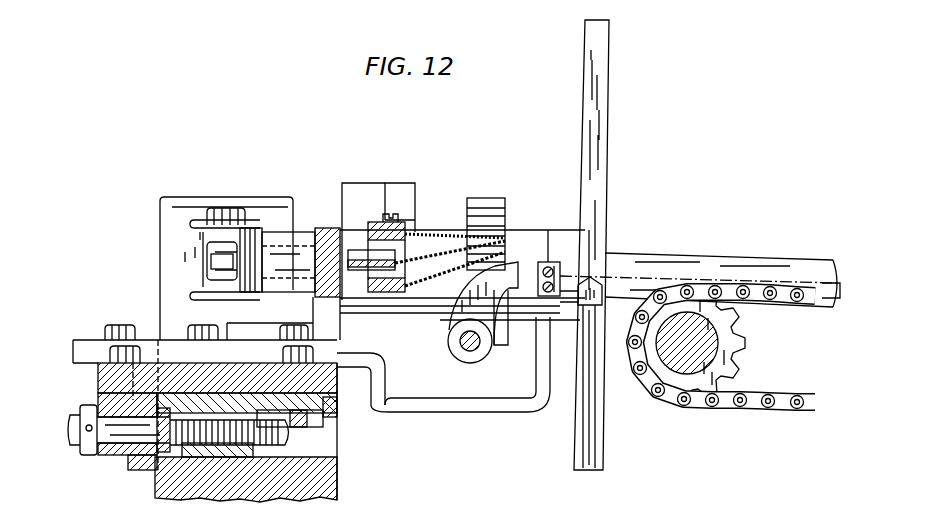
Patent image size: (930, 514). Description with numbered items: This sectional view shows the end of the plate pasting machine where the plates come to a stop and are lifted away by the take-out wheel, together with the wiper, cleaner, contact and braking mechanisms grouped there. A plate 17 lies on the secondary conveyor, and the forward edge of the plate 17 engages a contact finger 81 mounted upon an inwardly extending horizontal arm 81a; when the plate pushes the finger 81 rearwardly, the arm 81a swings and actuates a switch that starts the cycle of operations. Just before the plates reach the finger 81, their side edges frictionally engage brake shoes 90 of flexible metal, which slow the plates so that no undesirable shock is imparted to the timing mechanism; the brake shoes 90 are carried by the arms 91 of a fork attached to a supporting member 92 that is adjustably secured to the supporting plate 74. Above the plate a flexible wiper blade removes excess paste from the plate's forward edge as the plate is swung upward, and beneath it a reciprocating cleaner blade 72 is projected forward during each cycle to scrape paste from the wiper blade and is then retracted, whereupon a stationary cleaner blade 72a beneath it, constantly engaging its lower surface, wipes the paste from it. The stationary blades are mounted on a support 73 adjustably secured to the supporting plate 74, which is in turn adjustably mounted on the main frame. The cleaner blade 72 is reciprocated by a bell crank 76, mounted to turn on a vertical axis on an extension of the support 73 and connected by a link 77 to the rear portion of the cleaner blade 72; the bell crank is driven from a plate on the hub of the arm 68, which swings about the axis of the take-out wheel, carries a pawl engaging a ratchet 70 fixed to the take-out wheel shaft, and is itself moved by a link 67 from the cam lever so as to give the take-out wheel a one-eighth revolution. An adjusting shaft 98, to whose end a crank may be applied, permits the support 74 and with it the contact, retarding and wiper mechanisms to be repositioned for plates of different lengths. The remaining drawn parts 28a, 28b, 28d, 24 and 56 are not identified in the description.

The support 73 is at (143, 338).
The bell crank 76 is at (207, 262).
The link 77 is at (244, 285).
The arm 68 is at (373, 196).
The link 67 is at (408, 197).
The reciprocating cleaner blade 72 is at (438, 253).
The stationary cleaner blade 72a is at (424, 279).
The ratchet 70 is at (488, 212).
The contact finger 81 is at (513, 312).
The horizontal arm 81a is at (473, 352).
The brake shoes 90 is at (561, 270).
The vertical bar 28b is at (600, 194).
The clamp 28a is at (601, 306).
The rod 28d is at (742, 267).
The plate 17 is at (652, 273).
The sprocket 24 is at (715, 348).
The supporting plate 74 is at (100, 371).
The adjusting shaft 98 is at (161, 481).
The supporting member 92 is at (334, 351).
The arms 91 is at (503, 410).
The chain 56 is at (701, 513).